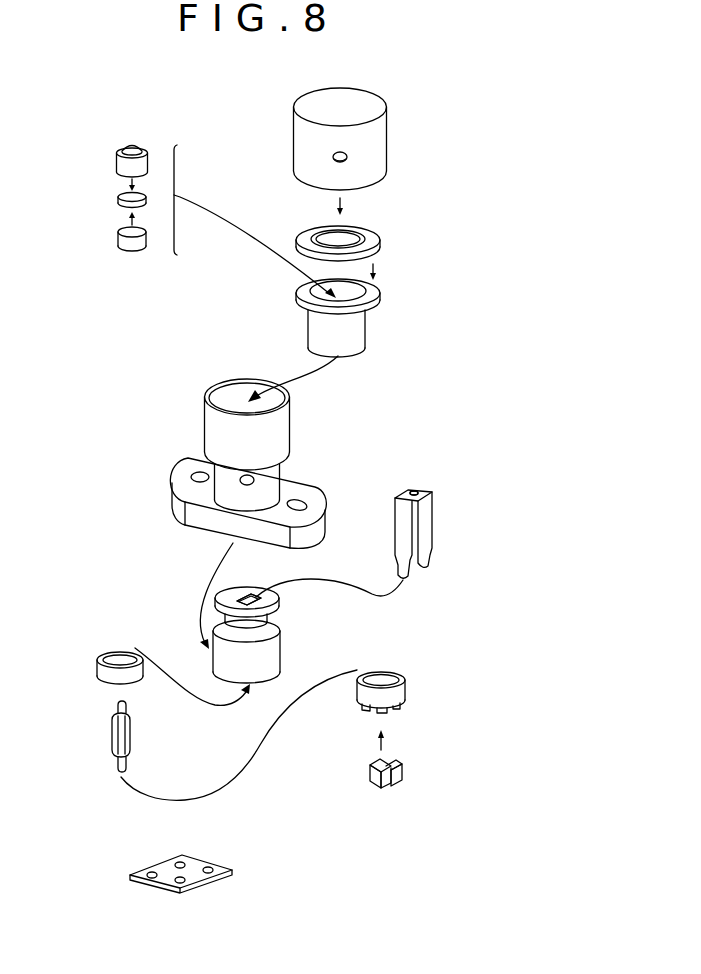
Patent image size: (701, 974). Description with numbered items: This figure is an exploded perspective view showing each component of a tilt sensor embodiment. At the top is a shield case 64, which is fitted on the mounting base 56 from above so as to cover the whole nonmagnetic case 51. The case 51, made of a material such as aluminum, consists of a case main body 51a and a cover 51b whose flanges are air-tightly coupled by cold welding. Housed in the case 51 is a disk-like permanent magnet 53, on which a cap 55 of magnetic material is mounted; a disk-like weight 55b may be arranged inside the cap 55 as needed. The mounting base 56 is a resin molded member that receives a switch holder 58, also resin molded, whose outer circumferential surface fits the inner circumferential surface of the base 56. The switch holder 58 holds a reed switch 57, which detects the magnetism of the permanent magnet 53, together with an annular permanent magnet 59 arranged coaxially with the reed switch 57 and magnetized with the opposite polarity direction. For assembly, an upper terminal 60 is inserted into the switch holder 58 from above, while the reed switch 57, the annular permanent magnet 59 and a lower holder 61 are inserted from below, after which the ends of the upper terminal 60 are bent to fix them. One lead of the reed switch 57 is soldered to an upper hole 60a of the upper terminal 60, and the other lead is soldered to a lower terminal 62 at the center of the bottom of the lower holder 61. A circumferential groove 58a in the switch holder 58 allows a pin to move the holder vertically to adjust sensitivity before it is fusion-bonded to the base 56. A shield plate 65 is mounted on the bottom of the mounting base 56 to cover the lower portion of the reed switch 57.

The nonmagnetic case 51 is at (453, 232).
The case main body 51a is at (381, 295).
The cover 51b is at (381, 242).
The disk-like permanent magnet 53 is at (118, 238).
The cap 55 is at (116, 159).
The disk-like weight 55b is at (118, 198).
The mounting base 56 is at (291, 438).
The reed switch 57 is at (132, 749).
The switch holder 58 is at (213, 653).
The groove 58a is at (281, 619).
The annular permanent magnet 59 is at (122, 650).
The upper terminal 60 is at (433, 507).
The upper hole 60a is at (414, 488).
The lower holder 61 is at (407, 691).
The lower terminal 62 is at (404, 776).
The shield case 64 is at (387, 146).
The shield plate 65 is at (147, 868).